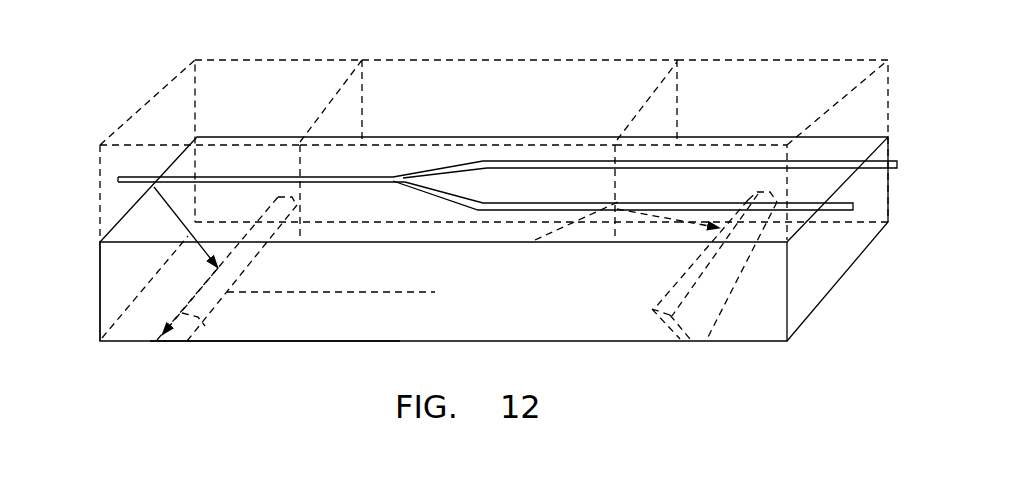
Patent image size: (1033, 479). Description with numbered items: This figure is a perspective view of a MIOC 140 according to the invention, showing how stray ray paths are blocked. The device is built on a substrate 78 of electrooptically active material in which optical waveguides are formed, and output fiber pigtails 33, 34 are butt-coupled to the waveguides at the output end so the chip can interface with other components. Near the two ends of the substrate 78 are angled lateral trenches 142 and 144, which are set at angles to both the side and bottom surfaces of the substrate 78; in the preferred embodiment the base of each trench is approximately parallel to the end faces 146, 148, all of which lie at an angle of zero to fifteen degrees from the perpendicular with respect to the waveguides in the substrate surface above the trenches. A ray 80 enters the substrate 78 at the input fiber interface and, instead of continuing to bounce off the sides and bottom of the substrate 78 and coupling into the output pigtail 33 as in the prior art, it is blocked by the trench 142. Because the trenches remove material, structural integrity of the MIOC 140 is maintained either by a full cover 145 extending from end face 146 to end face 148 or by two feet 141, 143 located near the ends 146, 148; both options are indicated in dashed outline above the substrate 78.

The output fiber pigtail 33 is at (843, 208).
The output fiber pigtail 34 is at (883, 140).
The substrate 78 is at (237, 342).
The ray 80 is at (168, 212).
The MIOC 140 is at (313, 388).
The foot 141 is at (152, 100).
The angled lateral trench 142 is at (170, 352).
The foot 143 is at (725, 58).
The angled lateral trench 144 is at (675, 345).
The full cover 145 is at (617, 60).
The end face 146 is at (100, 165).
The end face 148 is at (810, 280).